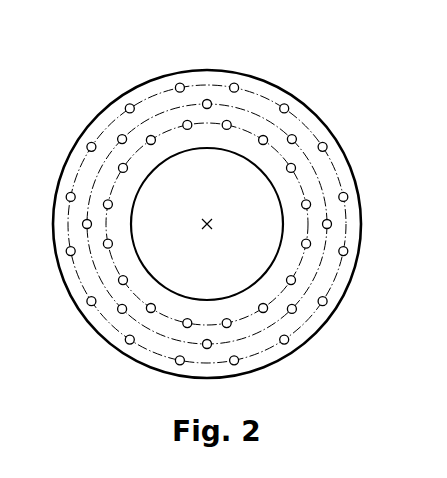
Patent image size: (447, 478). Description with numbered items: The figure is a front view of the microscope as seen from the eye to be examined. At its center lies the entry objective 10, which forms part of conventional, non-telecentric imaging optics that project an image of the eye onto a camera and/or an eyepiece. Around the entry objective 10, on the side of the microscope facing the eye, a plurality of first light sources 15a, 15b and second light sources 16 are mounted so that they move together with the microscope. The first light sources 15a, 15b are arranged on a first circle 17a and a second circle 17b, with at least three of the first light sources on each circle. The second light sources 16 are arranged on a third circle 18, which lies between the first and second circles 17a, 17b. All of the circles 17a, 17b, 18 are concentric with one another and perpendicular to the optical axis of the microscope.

The entry objective 10 is at (206, 260).
The first light sources 15a is at (207, 193).
The first light sources 15b is at (219, 181).
The second light sources 16 is at (192, 213).
The first circle 17a is at (195, 233).
The second circle 17b is at (189, 272).
The third circle 18 is at (214, 257).